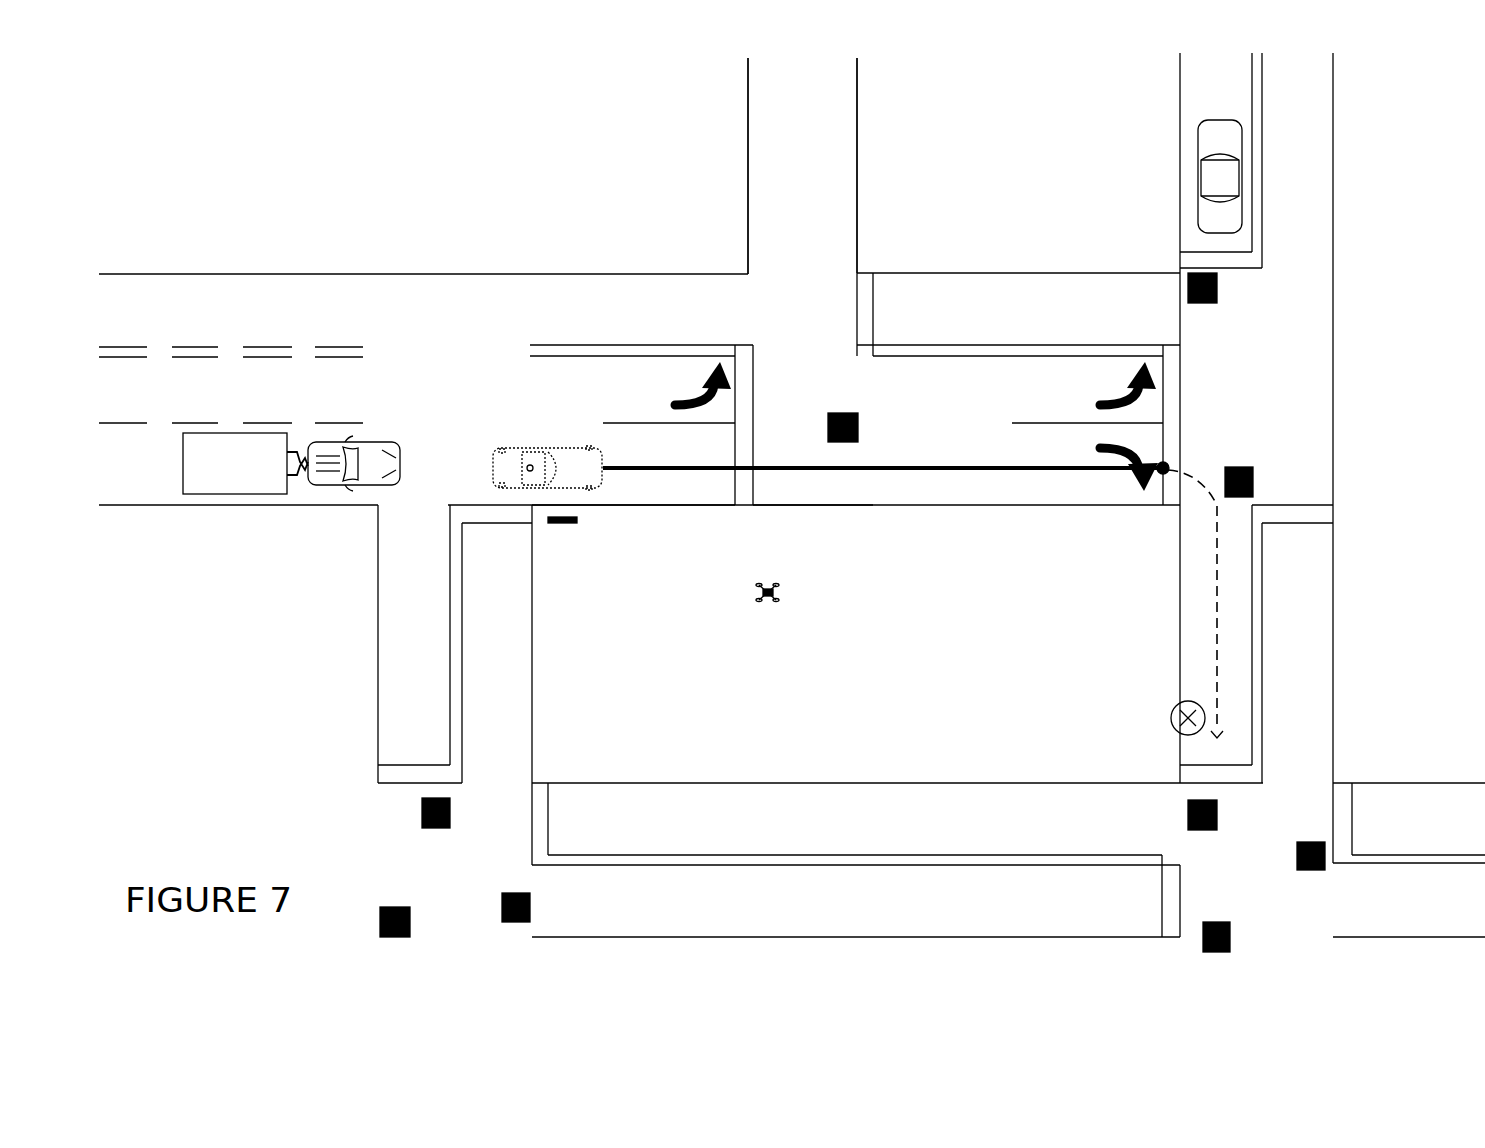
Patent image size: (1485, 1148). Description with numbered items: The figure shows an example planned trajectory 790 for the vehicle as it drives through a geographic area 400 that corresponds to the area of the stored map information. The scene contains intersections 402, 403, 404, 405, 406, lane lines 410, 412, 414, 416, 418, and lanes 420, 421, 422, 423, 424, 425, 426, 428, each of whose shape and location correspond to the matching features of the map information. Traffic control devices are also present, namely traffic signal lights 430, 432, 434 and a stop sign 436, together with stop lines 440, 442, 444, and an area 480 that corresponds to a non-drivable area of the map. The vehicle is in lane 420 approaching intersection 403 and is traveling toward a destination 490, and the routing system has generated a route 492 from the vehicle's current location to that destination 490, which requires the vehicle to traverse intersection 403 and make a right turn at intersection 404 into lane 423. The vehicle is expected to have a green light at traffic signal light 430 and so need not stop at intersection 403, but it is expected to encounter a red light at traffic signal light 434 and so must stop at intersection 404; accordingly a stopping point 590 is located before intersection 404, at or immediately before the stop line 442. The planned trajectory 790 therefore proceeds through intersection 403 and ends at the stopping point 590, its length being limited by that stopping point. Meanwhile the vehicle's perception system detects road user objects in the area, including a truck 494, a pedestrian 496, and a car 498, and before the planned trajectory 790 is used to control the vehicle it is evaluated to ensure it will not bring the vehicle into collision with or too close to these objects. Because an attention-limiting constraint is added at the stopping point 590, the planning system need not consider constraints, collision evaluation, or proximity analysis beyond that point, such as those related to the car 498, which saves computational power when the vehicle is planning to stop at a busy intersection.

The geographic area 400 is at (228, 860).
The intersection 402 is at (480, 425).
The intersection 403 is at (830, 462).
The intersection 404 is at (1273, 394).
The intersection 405 is at (1272, 876).
The intersection 406 is at (473, 876).
The lane line 410 is at (637, 421).
The lane line 412 is at (712, 352).
The lane line 414 is at (1070, 343).
The lane line 416 is at (932, 863).
The lane line 418 is at (453, 685).
The lane 420 is at (668, 462).
The lane 421 is at (670, 409).
The lane 422 is at (1048, 409).
The lane 423 is at (1237, 640).
The lane 424 is at (1120, 842).
The lane 425 is at (517, 641).
The lane 426 is at (823, 230).
The lane 428 is at (1318, 230).
The traffic signal light 430 is at (827, 413).
The traffic signal light 432 is at (1185, 273).
The traffic signal light 434 is at (1255, 478).
The stop sign 436 is at (562, 527).
The stop line 440 is at (743, 507).
The stop line 442 is at (1182, 448).
The stop line 444 is at (1265, 782).
The area 480 is at (878, 660).
The destination 490 is at (1205, 718).
The route 492 is at (1217, 579).
The truck 494 is at (181, 487).
The pedestrian 496 is at (760, 590).
The car 498 is at (1242, 197).
The stopping point 590 is at (1160, 473).
The planned trajectory 790 is at (987, 470).